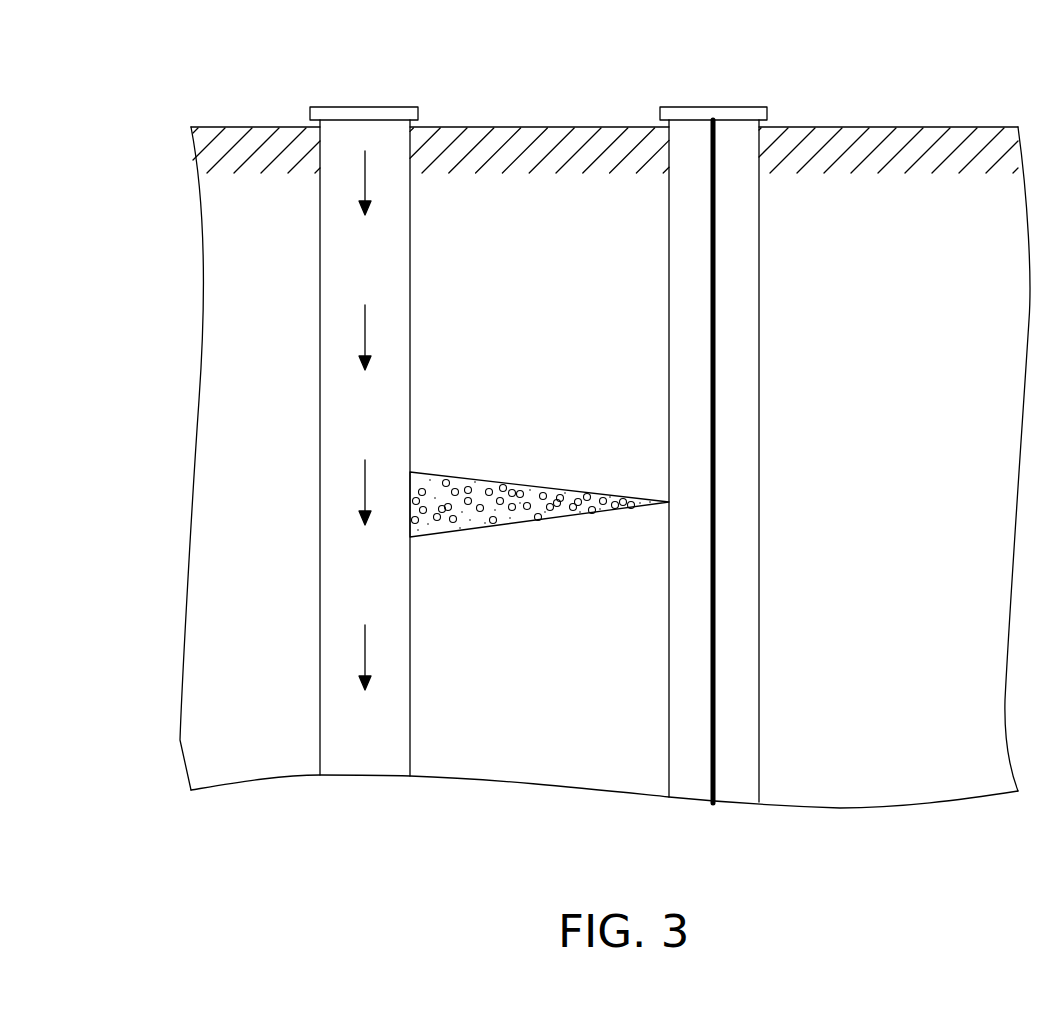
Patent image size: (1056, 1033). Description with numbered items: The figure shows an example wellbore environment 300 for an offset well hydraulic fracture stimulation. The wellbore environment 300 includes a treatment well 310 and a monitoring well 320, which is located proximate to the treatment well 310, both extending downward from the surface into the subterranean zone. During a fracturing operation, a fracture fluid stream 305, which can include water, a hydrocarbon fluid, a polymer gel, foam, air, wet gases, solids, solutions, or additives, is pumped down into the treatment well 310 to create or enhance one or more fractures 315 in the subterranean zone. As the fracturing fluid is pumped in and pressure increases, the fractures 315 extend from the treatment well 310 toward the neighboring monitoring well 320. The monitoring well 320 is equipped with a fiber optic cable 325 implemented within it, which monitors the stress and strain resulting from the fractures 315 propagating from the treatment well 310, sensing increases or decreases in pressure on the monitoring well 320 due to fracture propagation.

The wellbore environment 300 is at (160, 89).
The fracture fluid stream 305 is at (365, 333).
The treatment well 310 is at (386, 107).
The fractures 315 is at (518, 480).
The monitoring well 320 is at (737, 107).
The fiber optic cable 325 is at (716, 488).